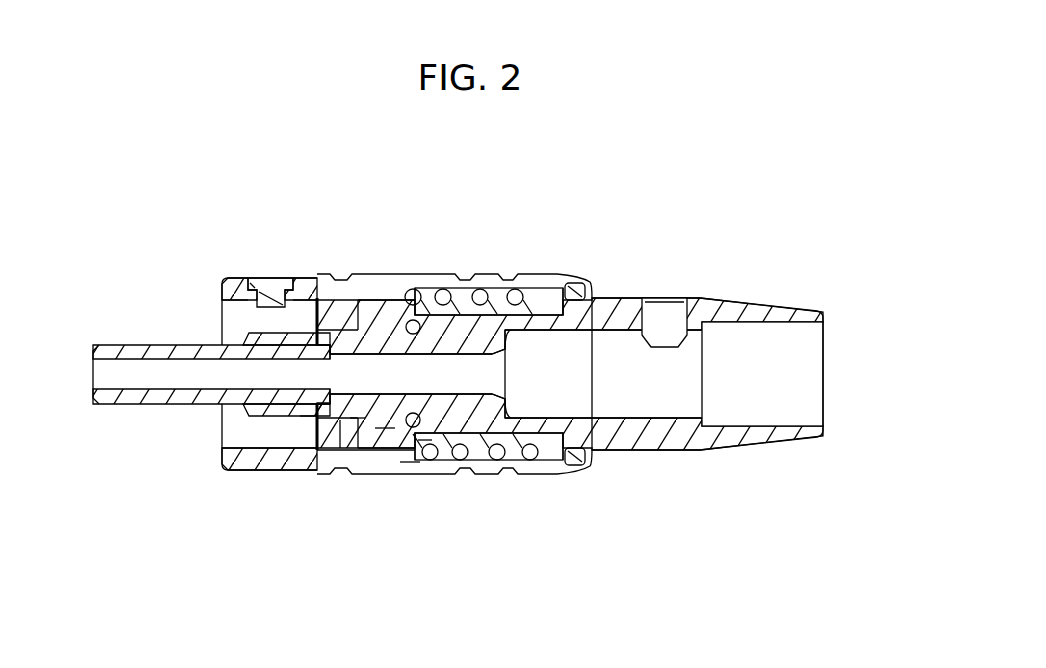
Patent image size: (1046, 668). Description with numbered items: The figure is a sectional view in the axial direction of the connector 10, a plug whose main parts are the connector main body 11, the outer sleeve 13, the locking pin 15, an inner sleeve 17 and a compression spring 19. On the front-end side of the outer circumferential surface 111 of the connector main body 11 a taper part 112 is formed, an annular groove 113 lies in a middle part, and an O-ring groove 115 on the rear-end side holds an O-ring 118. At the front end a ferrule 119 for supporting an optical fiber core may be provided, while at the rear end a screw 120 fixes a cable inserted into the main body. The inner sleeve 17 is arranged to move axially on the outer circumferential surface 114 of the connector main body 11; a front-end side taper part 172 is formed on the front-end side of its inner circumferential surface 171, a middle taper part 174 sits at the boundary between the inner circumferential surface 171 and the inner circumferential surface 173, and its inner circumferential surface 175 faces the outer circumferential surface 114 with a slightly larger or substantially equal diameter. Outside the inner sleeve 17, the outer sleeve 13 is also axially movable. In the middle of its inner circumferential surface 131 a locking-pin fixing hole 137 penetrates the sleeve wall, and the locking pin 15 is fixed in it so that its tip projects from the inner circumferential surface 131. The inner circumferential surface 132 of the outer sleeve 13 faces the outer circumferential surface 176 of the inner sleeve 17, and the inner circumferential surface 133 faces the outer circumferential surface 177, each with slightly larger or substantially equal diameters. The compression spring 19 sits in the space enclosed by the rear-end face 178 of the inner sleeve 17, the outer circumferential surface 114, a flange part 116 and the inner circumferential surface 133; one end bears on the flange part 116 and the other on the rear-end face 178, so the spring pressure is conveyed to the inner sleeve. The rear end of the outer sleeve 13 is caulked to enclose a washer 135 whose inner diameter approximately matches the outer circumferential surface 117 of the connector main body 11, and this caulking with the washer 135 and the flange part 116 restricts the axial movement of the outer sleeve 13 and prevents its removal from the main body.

The connector 10 is at (617, 158).
The connector main body 11 is at (735, 316).
The outer sleeve 13 is at (532, 285).
The locking pin 15 is at (269, 280).
The inner sleeve 17 is at (375, 447).
The compression spring 19 is at (472, 300).
The outer circumferential surface 111 is at (312, 283).
The taper part 112 is at (222, 338).
The annular groove 113 is at (360, 285).
The outer circumferential surface 114 is at (504, 285).
The O-ring groove 115 is at (404, 285).
The flange part 116 is at (553, 285).
The outer circumferential surface 117 is at (612, 303).
The O-ring 118 is at (421, 292).
The ferrule 119 is at (141, 355).
The screw 120 is at (667, 308).
The inner circumferential surface 131 is at (235, 278).
The inner circumferential surface 132 is at (383, 300).
The inner circumferential surface 133 is at (462, 293).
The washer 135 is at (580, 286).
The locking-pin fixing hole 137 is at (300, 283).
The inner circumferential surface 171 is at (335, 440).
The front-end side taper part 172 is at (305, 432).
The inner circumferential surface 173 is at (383, 428).
The middle taper part 174 is at (357, 433).
The inner circumferential surface 175 is at (472, 455).
The outer circumferential surface 176 is at (350, 445).
The outer circumferential surface 177 is at (411, 465).
The rear-end face 178 is at (425, 445).